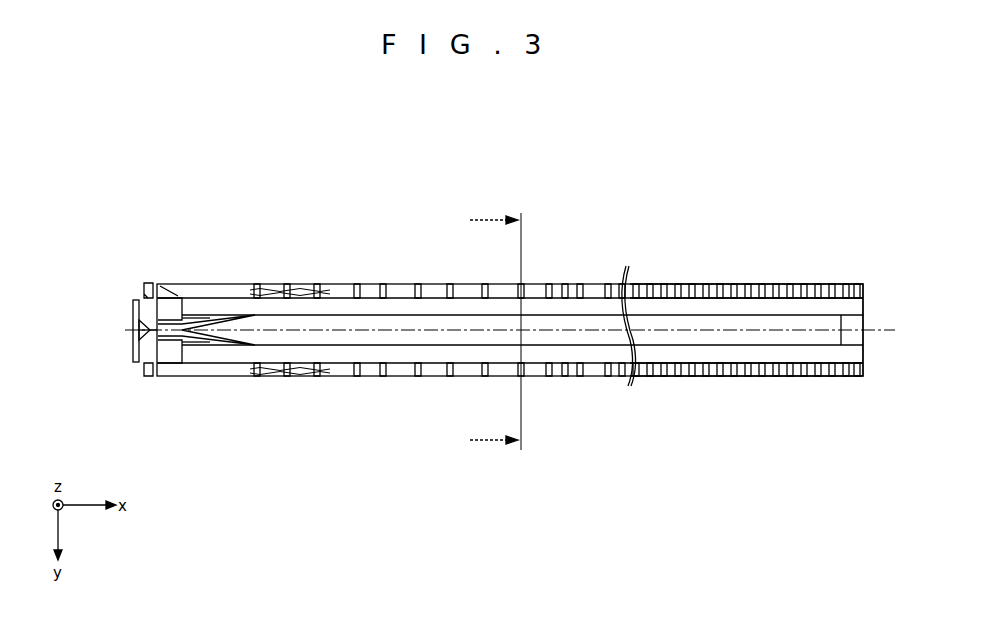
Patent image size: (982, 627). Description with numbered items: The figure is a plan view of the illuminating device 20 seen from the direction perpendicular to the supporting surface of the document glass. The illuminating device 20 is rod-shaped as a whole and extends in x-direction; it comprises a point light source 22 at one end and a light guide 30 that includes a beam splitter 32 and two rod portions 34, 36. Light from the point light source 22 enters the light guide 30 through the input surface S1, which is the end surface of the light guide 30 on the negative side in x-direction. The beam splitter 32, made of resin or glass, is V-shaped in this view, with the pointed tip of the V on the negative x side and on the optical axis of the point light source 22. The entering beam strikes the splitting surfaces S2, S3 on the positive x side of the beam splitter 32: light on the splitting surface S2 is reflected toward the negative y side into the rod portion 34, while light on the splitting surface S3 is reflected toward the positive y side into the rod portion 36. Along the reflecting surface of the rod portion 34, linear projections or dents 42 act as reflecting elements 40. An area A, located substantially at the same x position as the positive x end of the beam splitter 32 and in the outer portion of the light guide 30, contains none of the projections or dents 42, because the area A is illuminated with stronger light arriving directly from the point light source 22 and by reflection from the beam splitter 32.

The illuminating device 20 is at (142, 127).
The point light source 22 is at (125, 331).
The light guide 30 is at (214, 216).
The beam splitter 32 is at (182, 297).
The rod portion 34 is at (431, 313).
The rod portion 36 is at (437, 347).
The reflecting elements 40 is at (688, 273).
The projections or dents 42 is at (657, 283).
The input surface S1 is at (164, 297).
The splitting surface S2 is at (212, 318).
The splitting surface S3 is at (200, 345).
The area A is at (300, 290).